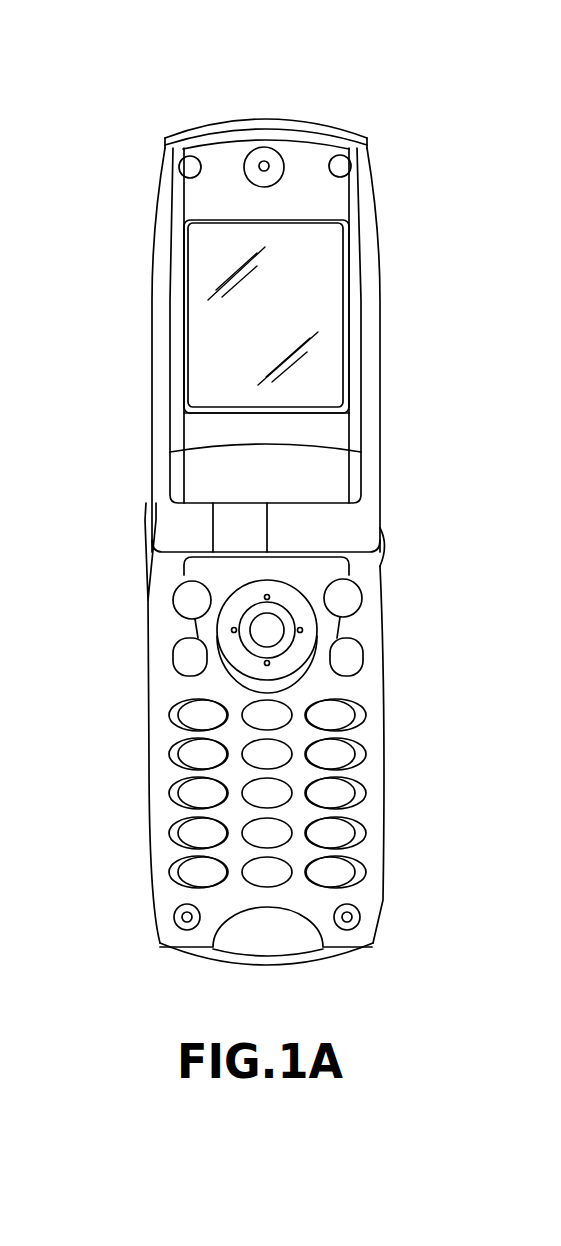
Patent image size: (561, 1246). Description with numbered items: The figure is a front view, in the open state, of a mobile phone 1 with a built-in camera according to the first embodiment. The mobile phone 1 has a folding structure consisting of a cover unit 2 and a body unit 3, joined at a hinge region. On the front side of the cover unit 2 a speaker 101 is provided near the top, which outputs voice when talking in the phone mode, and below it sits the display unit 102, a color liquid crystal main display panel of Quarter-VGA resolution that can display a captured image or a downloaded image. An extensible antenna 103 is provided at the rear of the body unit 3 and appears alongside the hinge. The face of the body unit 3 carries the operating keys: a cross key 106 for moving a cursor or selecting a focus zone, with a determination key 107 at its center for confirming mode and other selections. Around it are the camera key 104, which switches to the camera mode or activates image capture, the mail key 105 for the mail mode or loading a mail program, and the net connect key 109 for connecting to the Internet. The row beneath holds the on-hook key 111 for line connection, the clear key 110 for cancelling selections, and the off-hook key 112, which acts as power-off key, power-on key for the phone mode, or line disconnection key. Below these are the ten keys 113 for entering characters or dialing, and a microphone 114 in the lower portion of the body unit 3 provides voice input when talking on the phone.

The mobile phone 1 is at (380, 113).
The cover unit 2 is at (150, 283).
The body unit 3 is at (150, 823).
The speaker 101 is at (264, 160).
The display unit 102 is at (322, 256).
The extensible antenna 103 is at (145, 523).
The camera key 104 is at (173, 602).
The mail key 105 is at (173, 657).
The cross key 106 is at (272, 594).
The determination key 107 is at (272, 627).
The net connect key 109 is at (363, 657).
The clear key 110 is at (257, 708).
The on-hook key 111 is at (170, 717).
The off-hook key 112 is at (366, 715).
The ten keys 113 is at (395, 747).
The microphone 114 is at (174, 917).